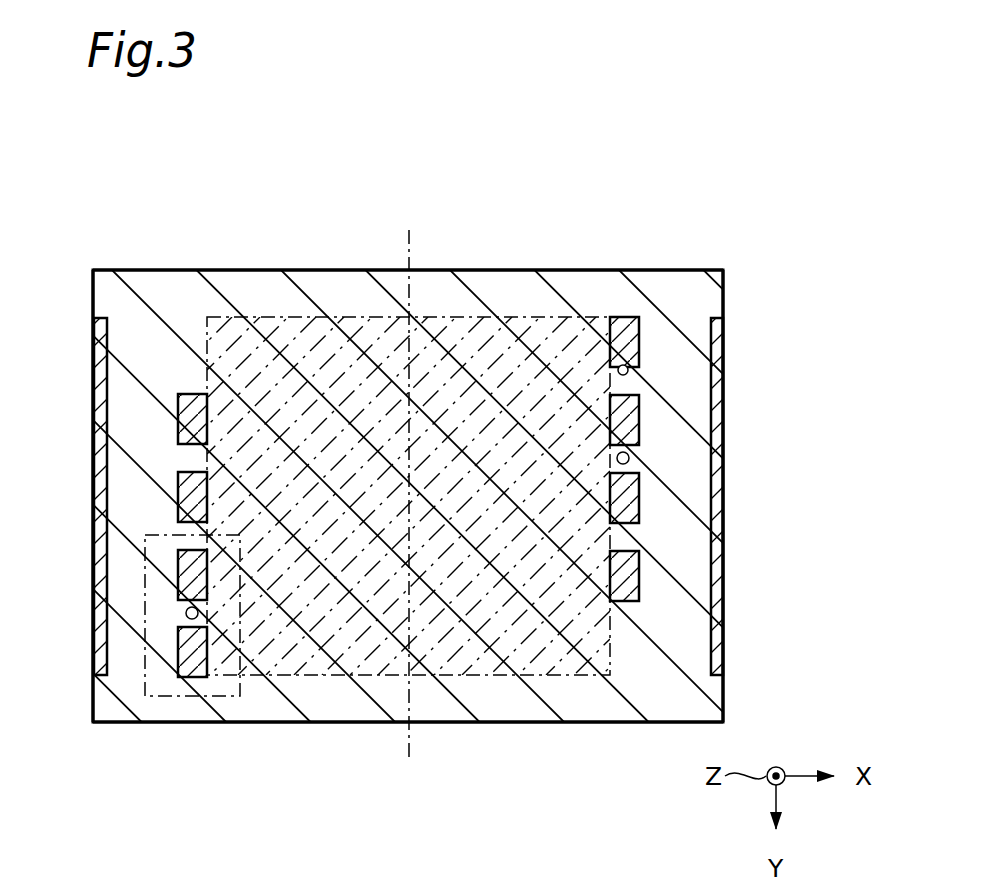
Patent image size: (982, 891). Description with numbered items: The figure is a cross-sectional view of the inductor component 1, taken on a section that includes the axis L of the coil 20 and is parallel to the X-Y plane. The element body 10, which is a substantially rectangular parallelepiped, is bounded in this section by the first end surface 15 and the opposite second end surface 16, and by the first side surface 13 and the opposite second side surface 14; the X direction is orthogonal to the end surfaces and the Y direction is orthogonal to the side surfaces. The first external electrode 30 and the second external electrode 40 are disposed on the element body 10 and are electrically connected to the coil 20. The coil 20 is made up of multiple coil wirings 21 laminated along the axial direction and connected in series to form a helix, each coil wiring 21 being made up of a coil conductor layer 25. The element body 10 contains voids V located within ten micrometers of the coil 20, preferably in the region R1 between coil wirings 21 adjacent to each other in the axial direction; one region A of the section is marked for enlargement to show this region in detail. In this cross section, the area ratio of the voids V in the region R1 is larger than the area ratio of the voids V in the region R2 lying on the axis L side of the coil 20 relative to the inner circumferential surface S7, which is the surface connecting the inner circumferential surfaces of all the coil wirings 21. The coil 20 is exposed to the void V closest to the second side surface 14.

The inductor component 1 is at (494, 205).
The element body 10 is at (547, 268).
The first side surface 13 is at (573, 723).
The second side surface 14 is at (688, 270).
The first end surface 15 is at (93, 300).
The second end surface 16 is at (725, 293).
The coil 20 is at (626, 312).
The coil wiring 21 is at (186, 413).
The coil conductor layer 25 is at (207, 490).
The first external electrode 30 is at (92, 418).
The second external electrode 40 is at (727, 412).
The void V is at (631, 377).
The region between adjacent coil wirings R1 is at (636, 385).
The region on the axis side of the coil R2 is at (363, 344).
The inner circumferential surface of the coil S7 is at (607, 355).
The region A is at (161, 699).
The axis L is at (409, 745).